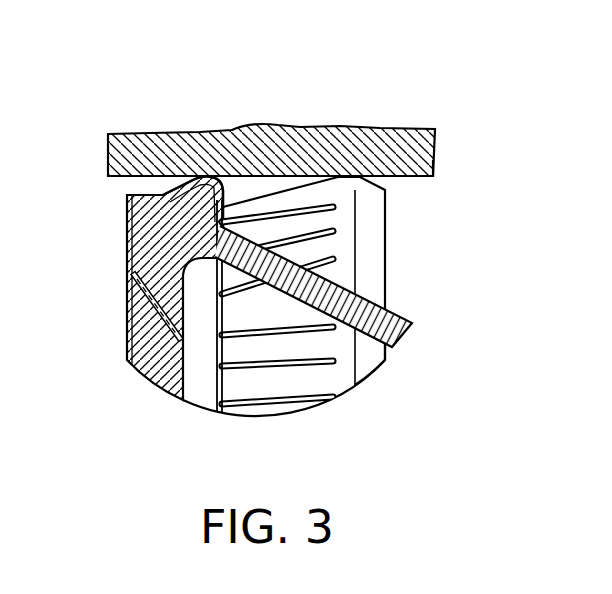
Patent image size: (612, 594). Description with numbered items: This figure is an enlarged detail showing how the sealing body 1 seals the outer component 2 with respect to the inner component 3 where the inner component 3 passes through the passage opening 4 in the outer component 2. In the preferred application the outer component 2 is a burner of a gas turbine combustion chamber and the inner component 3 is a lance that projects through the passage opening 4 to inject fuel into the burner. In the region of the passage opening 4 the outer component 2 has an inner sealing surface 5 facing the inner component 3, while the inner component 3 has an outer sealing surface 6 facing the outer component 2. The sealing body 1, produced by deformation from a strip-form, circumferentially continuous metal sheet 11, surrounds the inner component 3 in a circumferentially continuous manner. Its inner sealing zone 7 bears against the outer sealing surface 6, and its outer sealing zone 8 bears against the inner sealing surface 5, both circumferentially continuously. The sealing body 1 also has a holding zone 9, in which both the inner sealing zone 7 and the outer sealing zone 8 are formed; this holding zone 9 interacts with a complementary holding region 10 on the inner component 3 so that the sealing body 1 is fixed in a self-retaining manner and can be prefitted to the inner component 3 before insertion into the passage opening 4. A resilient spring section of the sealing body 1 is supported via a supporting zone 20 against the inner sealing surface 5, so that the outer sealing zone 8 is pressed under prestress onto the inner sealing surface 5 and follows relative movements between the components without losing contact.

The sealing body 1 is at (377, 248).
The outer component 2 is at (301, 117).
The inner component 3 is at (402, 308).
The passage opening 4 is at (412, 185).
The inner sealing surface 5 is at (119, 178).
The outer sealing surface 6 is at (147, 211).
The inner sealing zone 7 is at (130, 303).
The outer sealing zone 8 is at (190, 176).
The holding zone 9 is at (172, 196).
The complementary holding region 10 is at (206, 255).
The metal sheet 11 is at (370, 357).
The supporting zone 20 is at (357, 176).